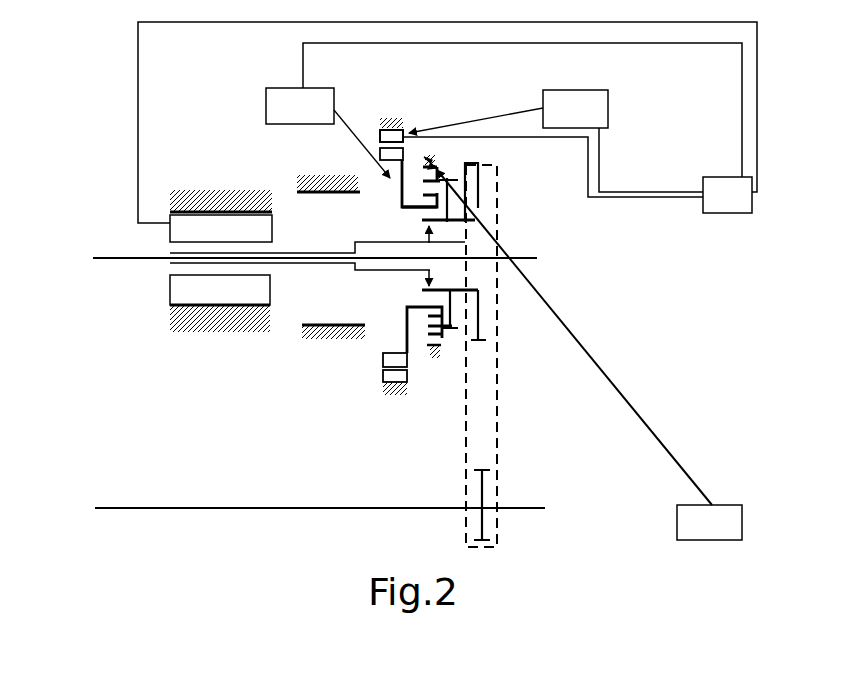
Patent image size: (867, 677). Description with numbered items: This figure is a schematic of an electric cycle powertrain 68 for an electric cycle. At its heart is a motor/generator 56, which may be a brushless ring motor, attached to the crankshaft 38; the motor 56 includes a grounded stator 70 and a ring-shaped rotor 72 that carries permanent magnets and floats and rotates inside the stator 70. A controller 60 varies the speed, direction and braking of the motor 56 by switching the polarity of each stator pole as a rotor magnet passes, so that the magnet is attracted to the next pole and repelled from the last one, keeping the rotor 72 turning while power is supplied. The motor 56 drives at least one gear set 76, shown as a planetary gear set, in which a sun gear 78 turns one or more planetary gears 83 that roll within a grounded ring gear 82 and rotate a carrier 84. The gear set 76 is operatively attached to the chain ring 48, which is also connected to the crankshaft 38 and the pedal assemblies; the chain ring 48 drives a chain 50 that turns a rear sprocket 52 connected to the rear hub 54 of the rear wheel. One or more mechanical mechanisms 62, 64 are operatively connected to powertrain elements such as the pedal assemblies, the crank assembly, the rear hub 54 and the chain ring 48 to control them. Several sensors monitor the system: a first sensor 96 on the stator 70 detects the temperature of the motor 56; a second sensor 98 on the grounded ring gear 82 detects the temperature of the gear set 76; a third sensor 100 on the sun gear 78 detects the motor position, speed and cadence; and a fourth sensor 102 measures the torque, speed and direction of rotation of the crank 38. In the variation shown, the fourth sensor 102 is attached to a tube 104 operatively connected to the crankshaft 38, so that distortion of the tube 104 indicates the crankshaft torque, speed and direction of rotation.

The crankshaft 38 is at (515, 255).
The chain ring 48 is at (485, 205).
The chain 50 is at (497, 400).
The rear sprocket 52 is at (482, 490).
The rear hub 54 is at (532, 508).
The motor/generator 56 is at (375, 138).
The controller 60 is at (527, 128).
The mechanical mechanism 62 is at (440, 243).
The mechanical mechanism 64 is at (303, 197).
The electric cycle powertrain 68 is at (630, 138).
The stator 70 is at (408, 134).
The rotor 72 is at (412, 151).
The gear set 76 is at (396, 193).
The sun gear 78 is at (410, 207).
The ring gear 82 is at (427, 157).
The planetary gear 83 is at (446, 340).
The carrier 84 is at (478, 166).
The first sensor 96 is at (600, 100).
The second sensor 98 is at (714, 530).
The third sensor 100 is at (290, 104).
The fourth sensor 102 is at (166, 232).
The tube 104 is at (172, 262).